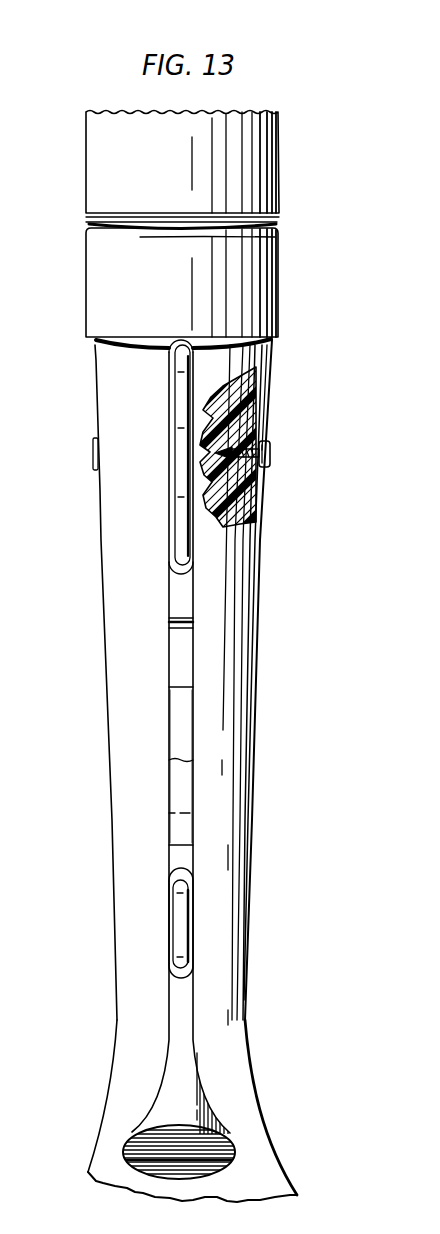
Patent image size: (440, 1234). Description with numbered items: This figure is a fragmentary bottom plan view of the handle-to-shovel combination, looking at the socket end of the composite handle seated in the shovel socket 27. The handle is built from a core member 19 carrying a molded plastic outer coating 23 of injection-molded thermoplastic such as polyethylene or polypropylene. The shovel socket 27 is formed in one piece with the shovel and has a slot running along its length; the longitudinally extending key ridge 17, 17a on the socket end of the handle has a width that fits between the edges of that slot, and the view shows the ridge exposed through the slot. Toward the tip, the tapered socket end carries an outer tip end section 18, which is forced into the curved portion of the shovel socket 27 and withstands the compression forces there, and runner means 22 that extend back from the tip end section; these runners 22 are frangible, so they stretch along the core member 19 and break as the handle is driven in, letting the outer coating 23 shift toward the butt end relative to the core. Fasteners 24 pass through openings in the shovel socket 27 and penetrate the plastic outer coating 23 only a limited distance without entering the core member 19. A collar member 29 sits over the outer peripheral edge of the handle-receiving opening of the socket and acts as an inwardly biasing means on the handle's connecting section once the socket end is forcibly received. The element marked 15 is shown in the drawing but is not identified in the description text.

The cap 15 is at (280, 218).
The collar member 29 is at (273, 272).
The key ridge 17 is at (182, 394).
The key ridge 17a is at (175, 920).
The molded plastic outer coating 23 is at (252, 388).
The fasteners 24 is at (270, 453).
The core member 19 is at (223, 485).
The shovel socket 27 is at (250, 692).
The runner means 22 is at (185, 783).
The outer tip end section 18 is at (184, 1084).